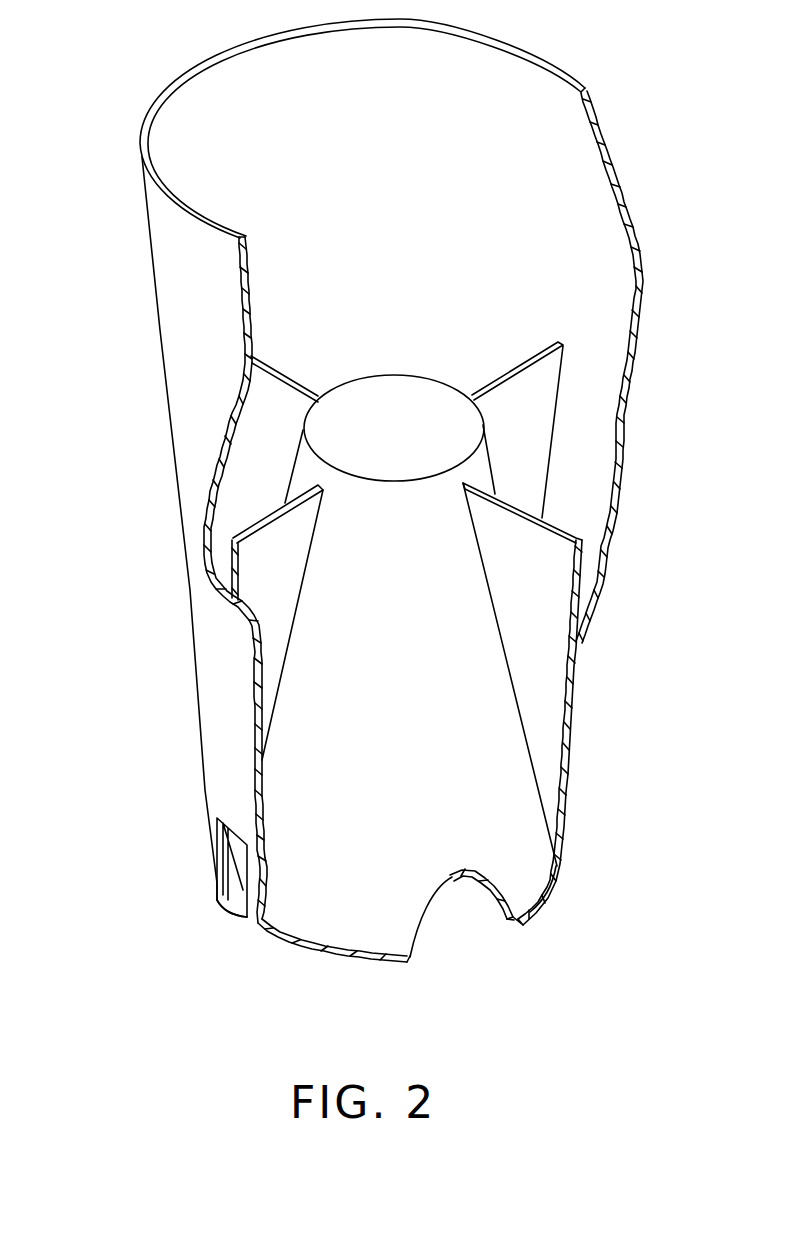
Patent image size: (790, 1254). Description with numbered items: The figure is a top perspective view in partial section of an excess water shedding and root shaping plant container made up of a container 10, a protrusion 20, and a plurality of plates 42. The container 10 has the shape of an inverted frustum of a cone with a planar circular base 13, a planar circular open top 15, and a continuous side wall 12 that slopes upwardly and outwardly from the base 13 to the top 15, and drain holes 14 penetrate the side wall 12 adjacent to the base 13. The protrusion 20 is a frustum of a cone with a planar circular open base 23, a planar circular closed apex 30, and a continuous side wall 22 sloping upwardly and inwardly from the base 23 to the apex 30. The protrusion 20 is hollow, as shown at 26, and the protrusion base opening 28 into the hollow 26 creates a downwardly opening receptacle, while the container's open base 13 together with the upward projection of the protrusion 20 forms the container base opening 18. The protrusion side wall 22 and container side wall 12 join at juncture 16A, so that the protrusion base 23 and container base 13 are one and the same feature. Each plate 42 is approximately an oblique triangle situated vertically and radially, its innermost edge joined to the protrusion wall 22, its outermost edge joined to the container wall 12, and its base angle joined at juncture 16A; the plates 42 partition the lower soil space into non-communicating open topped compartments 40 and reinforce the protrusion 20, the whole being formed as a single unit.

The container 10 is at (181, 77).
The open top 15 is at (147, 118).
The side wall 12 is at (177, 285).
The base 13 is at (262, 930).
The compartments 40 is at (590, 468).
The protrusion side wall 22 is at (472, 692).
The apex 30 is at (456, 437).
The protrusion 20 is at (441, 382).
The plates 42 is at (291, 517).
The drain holes 14 is at (215, 915).
The juncture 16A is at (270, 937).
The protrusion base opening 28 is at (418, 957).
The protrusion hollow 26 is at (470, 913).
The container base opening 18 is at (498, 927).
The protrusion base 23 is at (548, 898).